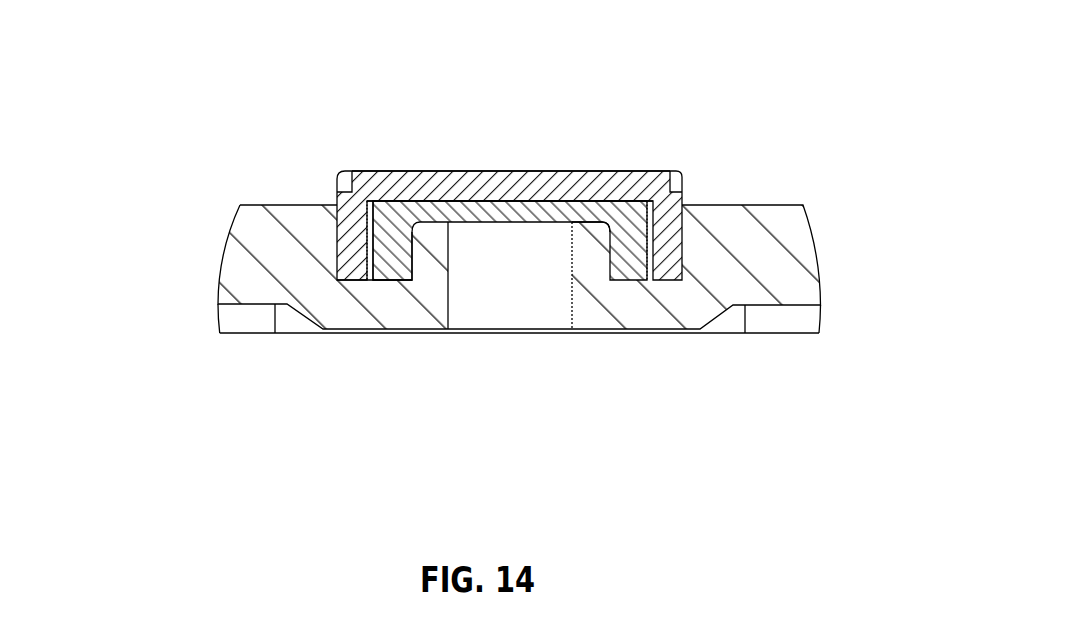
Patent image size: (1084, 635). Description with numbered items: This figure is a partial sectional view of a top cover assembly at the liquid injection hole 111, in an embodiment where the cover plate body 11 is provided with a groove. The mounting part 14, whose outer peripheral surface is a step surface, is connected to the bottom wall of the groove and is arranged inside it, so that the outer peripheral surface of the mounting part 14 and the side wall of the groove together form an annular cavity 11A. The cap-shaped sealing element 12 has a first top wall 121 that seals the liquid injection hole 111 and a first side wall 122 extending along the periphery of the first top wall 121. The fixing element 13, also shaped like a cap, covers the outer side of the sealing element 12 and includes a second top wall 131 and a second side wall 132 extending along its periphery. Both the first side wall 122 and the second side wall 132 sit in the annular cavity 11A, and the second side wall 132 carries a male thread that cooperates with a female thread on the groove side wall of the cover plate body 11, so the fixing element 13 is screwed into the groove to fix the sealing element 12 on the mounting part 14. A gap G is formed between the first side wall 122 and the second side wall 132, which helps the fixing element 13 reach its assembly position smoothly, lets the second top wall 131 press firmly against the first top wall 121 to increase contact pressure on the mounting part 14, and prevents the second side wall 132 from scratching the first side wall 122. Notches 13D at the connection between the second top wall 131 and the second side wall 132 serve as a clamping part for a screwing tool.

The cover plate body 11 is at (240, 217).
The annular cavity 11A is at (360, 283).
The liquid injection hole 111 is at (480, 283).
The sealing element 12 is at (642, 213).
The first top wall 121 is at (468, 203).
The first side wall 122 is at (390, 240).
The fixing element 13 is at (555, 149).
The second top wall 131 is at (624, 183).
The second side wall 132 is at (772, 333).
The notches 13D is at (342, 173).
The mounting part 14 is at (594, 278).
The gap G is at (369, 222).